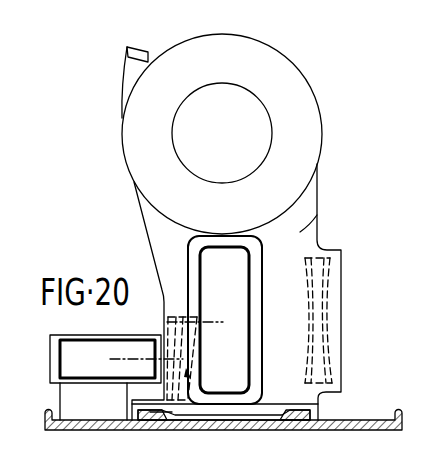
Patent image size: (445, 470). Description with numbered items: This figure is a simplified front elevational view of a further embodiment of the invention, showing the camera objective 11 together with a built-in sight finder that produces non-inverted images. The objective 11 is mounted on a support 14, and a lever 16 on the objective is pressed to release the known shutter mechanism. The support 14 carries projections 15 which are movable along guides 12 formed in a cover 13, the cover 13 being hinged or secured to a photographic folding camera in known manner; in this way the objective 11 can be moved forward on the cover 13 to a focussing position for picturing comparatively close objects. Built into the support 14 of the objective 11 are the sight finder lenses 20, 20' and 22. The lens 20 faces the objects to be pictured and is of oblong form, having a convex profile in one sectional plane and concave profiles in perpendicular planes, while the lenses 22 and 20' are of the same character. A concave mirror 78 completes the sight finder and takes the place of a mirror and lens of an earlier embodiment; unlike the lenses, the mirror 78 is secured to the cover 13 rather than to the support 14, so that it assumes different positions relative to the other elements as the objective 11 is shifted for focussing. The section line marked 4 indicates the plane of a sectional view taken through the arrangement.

The wheel 11 is at (255, 128).
The tab 16 is at (135, 65).
The housing 14 is at (303, 207).
The slot 20 is at (243, 320).
The spring element 22 is at (322, 272).
The slot portion 20' is at (179, 358).
The box 78 is at (92, 370).
The plate 12 is at (165, 424).
The plate portion 15 is at (144, 424).
The base 13 is at (44, 418).
The section line 4 is at (47, 360).